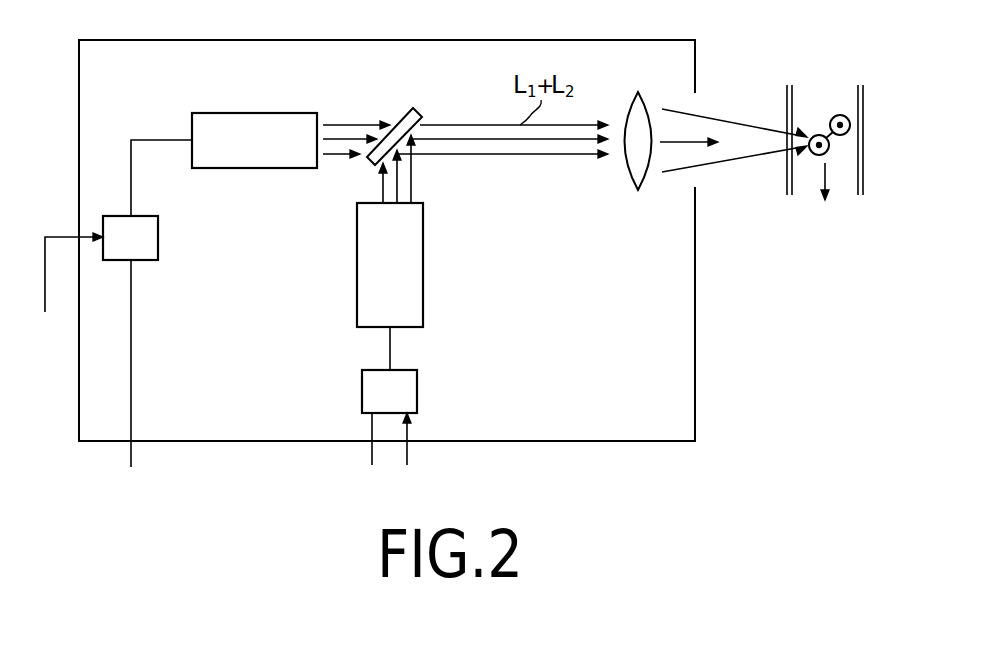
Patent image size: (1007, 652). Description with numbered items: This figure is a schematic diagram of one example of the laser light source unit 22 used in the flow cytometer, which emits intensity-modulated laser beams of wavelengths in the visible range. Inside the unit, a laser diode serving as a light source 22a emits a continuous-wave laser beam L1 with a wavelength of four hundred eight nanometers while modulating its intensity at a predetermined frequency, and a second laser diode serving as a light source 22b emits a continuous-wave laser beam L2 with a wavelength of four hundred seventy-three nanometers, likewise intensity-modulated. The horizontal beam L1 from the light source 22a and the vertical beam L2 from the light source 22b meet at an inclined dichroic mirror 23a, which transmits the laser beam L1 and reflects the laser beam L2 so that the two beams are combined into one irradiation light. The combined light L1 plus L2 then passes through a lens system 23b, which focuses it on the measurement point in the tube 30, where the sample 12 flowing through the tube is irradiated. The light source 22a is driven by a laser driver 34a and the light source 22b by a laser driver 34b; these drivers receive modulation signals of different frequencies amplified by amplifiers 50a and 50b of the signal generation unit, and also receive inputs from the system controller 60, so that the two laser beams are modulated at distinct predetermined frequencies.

The sample 12 is at (825, 95).
The laser light source unit 22 is at (695, 297).
The light source 22a is at (247, 168).
The light source 22b is at (357, 262).
The dichroic mirror 23a is at (401, 112).
The lens system 23b is at (641, 190).
The tube 30 is at (787, 185).
The laser driver 34a is at (158, 247).
The laser driver 34b is at (417, 395).
The amplifier 50a is at (131, 376).
The amplifier 50b is at (370, 454).
The system controller 60 is at (226, 364).
The laser beam L1 is at (345, 121).
The laser beam L2 is at (382, 193).